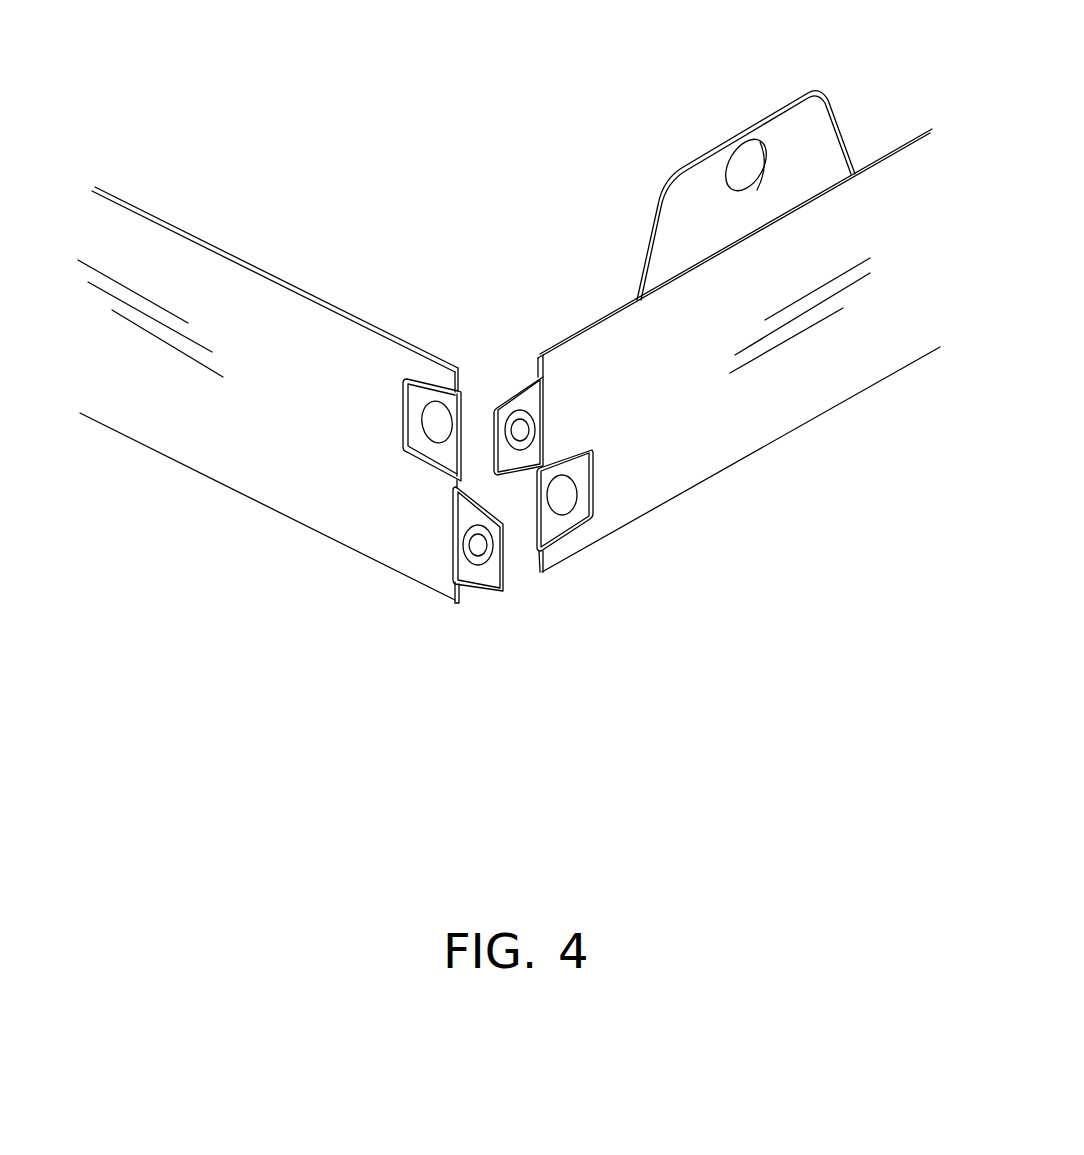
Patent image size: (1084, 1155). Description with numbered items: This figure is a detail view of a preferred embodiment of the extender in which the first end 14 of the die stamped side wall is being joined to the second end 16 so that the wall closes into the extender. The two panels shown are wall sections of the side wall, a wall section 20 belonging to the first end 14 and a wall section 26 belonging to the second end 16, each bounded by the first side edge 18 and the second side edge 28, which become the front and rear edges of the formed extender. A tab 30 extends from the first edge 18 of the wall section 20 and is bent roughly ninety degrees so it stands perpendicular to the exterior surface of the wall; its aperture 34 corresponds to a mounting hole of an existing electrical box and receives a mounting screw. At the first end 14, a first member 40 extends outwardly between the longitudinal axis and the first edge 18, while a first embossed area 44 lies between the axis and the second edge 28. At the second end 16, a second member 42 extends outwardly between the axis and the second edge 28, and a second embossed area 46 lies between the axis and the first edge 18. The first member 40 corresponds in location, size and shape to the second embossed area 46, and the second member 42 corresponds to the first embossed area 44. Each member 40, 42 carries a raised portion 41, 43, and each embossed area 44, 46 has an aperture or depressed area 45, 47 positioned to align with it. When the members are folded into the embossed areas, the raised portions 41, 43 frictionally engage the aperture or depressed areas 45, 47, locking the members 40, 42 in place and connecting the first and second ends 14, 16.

The first end 14 is at (717, 354).
The second end 16 is at (294, 430).
The first side edge 18 is at (197, 235).
The wall section 20 is at (792, 402).
The wall section 26 is at (283, 458).
The second side edge 28 is at (167, 460).
The tab 30 is at (720, 151).
The aperture 34 is at (738, 163).
The first member 40 is at (565, 356).
The raised portion 41 is at (520, 430).
The second member 42 is at (464, 605).
The raised portion 43 is at (478, 545).
The first embossed area 44 is at (603, 496).
The aperture or depressed area 45 is at (562, 495).
The second embossed area 46 is at (408, 388).
The aperture or depressed area 47 is at (437, 428).